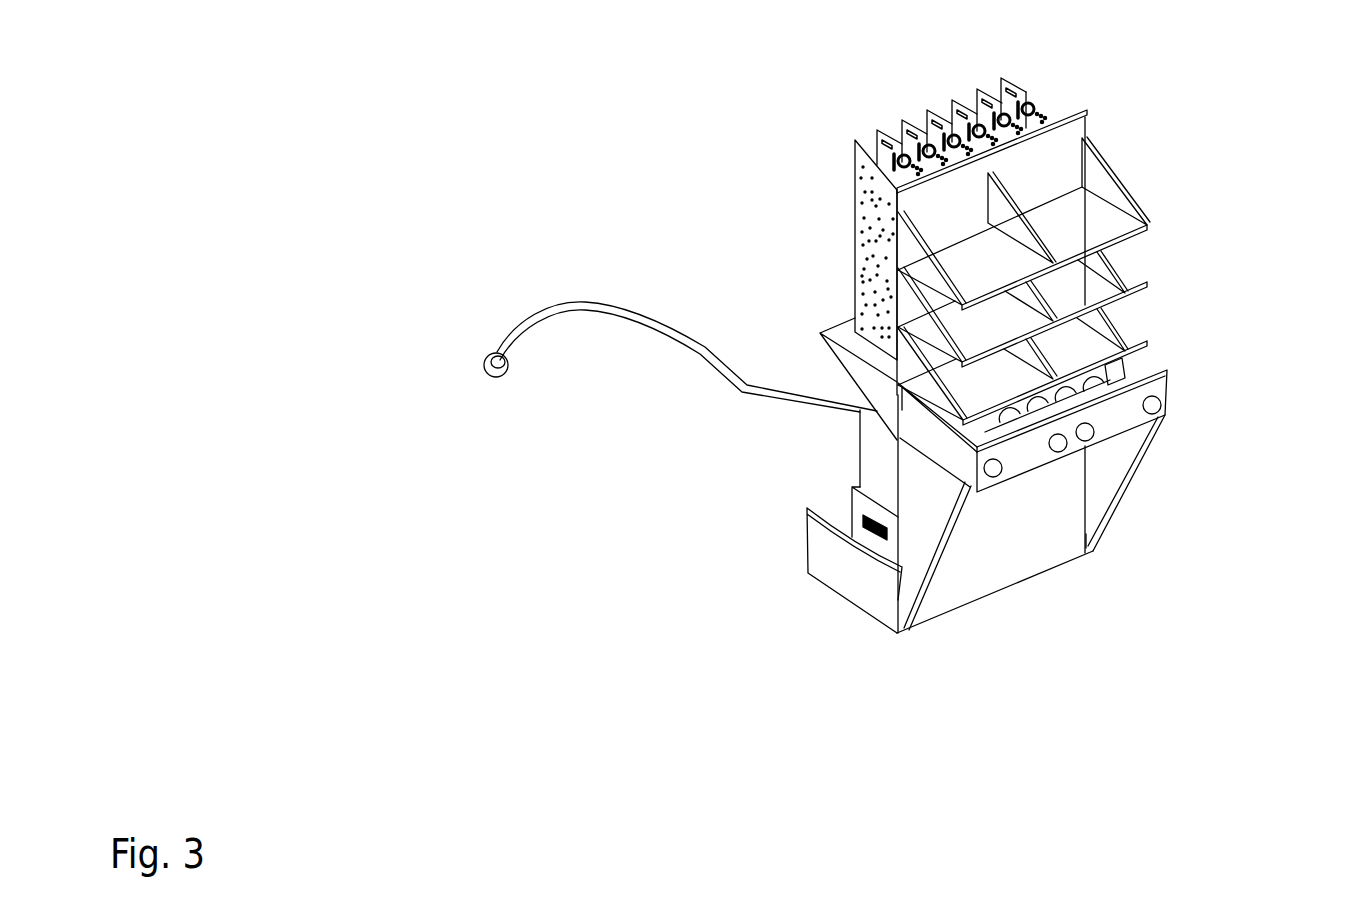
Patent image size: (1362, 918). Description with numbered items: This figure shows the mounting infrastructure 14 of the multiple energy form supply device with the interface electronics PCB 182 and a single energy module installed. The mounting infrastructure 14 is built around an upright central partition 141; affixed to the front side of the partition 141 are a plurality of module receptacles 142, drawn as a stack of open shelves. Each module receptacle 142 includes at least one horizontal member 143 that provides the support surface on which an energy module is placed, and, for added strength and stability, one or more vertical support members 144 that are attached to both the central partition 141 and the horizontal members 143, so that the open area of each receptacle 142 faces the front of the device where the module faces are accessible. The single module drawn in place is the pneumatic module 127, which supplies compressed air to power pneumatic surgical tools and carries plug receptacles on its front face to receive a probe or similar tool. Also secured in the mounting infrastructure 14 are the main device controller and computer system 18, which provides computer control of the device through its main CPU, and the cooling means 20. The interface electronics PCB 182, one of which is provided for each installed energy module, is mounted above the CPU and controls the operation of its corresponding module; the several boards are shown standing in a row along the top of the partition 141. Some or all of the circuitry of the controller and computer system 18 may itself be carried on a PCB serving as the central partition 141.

The mounting infrastructure 14 is at (1067, 138).
The upright central partition 141 is at (938, 200).
The module receptacles 142 is at (1122, 287).
The horizontal member 143 is at (973, 340).
The vertical support members 144 is at (1103, 213).
The interface electronics PCB 182 is at (927, 112).
The pneumatic module 127 is at (1130, 388).
The main device controller and computer system 18 is at (867, 465).
The cooling means 20 is at (863, 502).